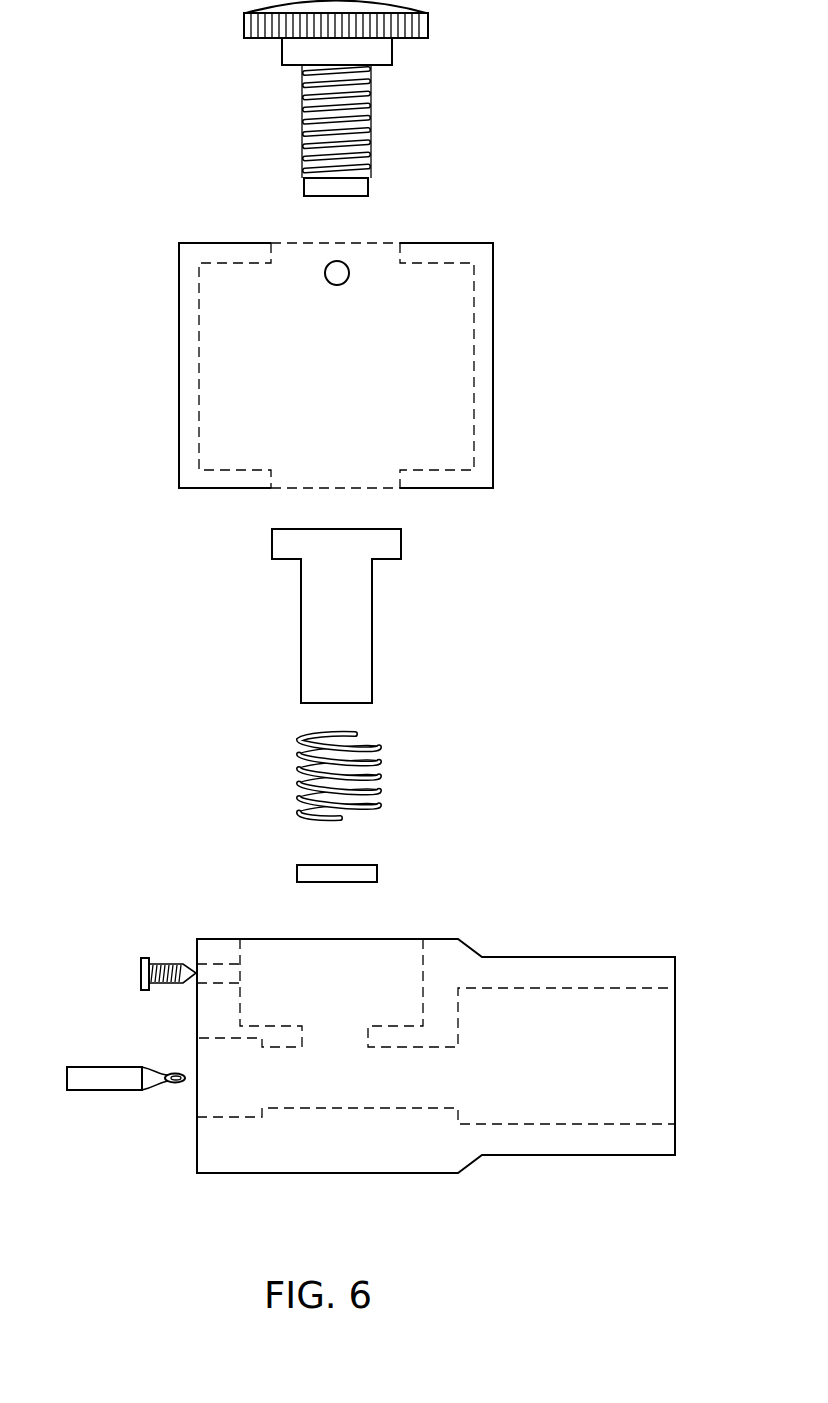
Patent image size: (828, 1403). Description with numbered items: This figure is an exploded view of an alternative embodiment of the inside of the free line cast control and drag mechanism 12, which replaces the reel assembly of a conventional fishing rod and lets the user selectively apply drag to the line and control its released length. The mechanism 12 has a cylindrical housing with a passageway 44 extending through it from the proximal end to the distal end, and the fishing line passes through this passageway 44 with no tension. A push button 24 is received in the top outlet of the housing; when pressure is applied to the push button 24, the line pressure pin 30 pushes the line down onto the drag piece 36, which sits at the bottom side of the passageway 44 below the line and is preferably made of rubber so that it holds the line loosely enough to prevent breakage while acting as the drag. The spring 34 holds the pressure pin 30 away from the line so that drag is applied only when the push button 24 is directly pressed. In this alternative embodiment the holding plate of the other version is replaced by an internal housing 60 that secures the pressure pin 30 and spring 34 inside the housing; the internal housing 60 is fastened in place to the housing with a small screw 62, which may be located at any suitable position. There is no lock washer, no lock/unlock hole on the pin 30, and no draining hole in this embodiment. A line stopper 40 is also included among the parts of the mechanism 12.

The push button 24 is at (372, 106).
The internal housing 60 is at (493, 377).
The line pressure pin 30 is at (372, 620).
The spring 34 is at (381, 778).
The drag piece 36 is at (377, 870).
The small screw 62 is at (145, 958).
The line stopper 40 is at (100, 1066).
The free line cast control and drag mechanism 12 is at (323, 1173).
The passageway 44 is at (222, 1102).